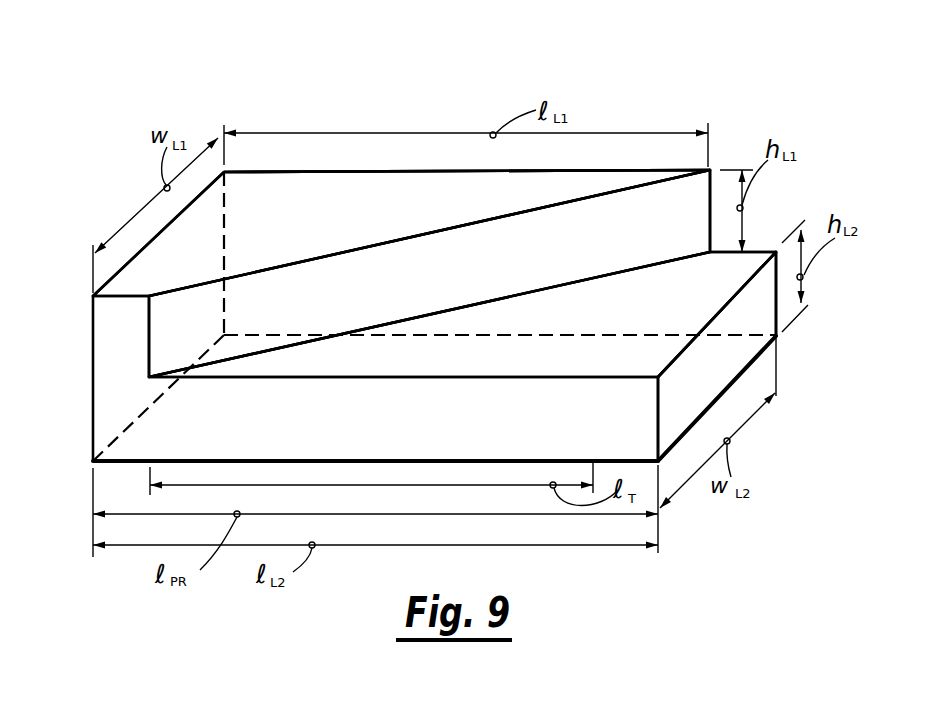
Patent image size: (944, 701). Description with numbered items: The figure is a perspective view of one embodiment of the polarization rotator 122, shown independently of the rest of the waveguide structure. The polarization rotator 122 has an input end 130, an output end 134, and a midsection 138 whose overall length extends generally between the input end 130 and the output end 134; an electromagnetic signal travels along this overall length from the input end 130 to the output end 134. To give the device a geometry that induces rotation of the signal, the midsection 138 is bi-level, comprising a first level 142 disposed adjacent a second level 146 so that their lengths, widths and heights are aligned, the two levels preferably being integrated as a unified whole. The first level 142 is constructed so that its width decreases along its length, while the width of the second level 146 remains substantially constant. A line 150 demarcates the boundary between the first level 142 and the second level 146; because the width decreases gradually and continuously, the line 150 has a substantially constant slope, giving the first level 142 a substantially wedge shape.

The polarization rotator 122 is at (710, 78).
The input end 130 is at (142, 248).
The output end 134 is at (717, 370).
The midsection 138 is at (123, 465).
The first level 142 is at (590, 176).
The second level 146 is at (753, 258).
The line 150 is at (580, 281).